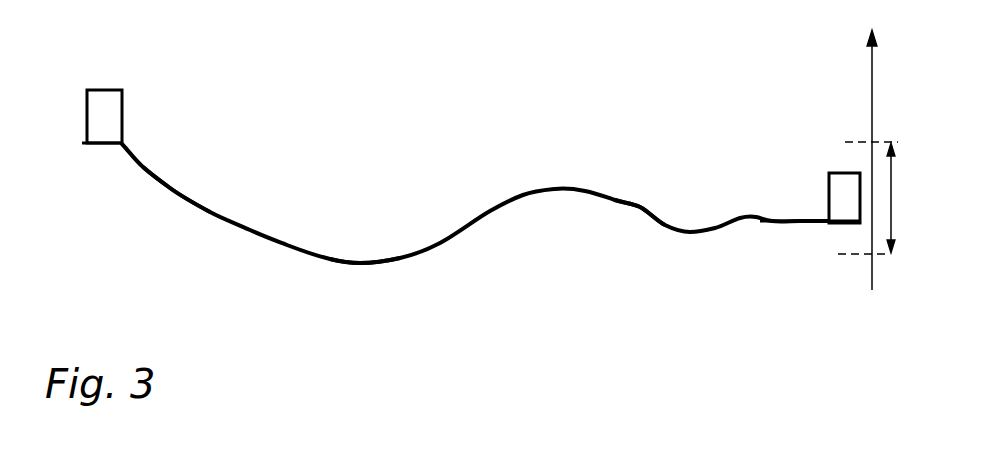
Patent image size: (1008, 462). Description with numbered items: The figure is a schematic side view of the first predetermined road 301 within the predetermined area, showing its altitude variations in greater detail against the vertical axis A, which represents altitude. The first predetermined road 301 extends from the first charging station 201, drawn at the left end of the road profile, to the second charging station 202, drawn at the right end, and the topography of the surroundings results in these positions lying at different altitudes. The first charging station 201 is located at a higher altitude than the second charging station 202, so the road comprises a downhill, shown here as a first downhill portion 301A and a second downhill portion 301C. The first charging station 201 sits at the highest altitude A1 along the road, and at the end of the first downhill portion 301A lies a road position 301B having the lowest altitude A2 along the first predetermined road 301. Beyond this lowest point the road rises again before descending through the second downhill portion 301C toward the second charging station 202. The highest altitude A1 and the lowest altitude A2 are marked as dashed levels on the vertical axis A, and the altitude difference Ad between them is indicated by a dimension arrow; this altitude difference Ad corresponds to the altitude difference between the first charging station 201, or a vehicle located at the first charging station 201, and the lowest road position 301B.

The first charging station 201 is at (99, 80).
The second charging station 202 is at (795, 168).
The first predetermined road 301 is at (647, 82).
The first downhill portion 301A is at (168, 188).
The road position 301B is at (380, 228).
The second downhill portion 301C is at (640, 206).
The vertical axis A is at (873, 72).
The highest altitude A1 is at (865, 142).
The lowest altitude A2 is at (860, 254).
The altitude difference Ad is at (907, 198).